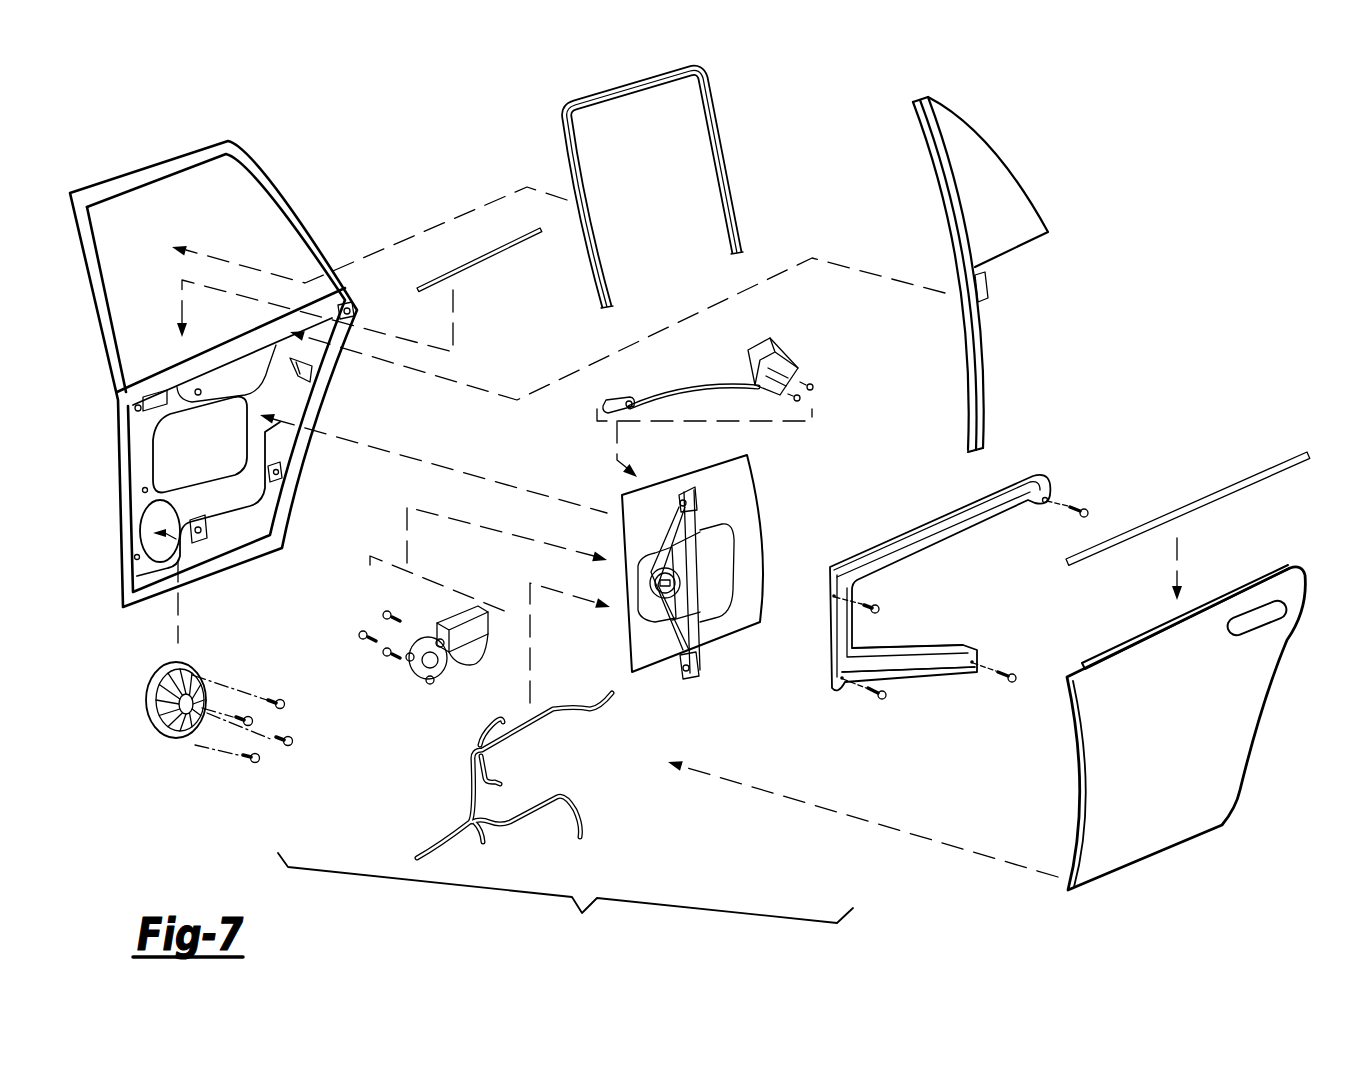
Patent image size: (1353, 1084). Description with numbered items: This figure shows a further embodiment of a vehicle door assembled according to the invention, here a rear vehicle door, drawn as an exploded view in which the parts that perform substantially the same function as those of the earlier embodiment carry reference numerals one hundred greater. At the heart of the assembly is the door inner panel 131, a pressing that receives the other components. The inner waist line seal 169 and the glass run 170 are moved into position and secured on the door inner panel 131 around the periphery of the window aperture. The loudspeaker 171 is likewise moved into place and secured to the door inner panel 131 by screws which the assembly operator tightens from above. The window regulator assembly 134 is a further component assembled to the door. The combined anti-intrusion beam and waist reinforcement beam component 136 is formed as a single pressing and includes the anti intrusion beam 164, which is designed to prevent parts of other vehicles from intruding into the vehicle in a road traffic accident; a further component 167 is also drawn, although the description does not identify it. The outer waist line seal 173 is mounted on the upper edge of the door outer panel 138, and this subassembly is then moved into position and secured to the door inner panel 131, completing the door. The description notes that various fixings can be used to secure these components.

The door inner panel 131 is at (250, 140).
The glass run 170 is at (684, 70).
The inner waist line seal 169 is at (508, 251).
The outer waist line seal 173 is at (1245, 480).
The door frame bracket 167 is at (959, 582).
The anti intrusion beam 164 is at (928, 648).
The combined anti-intrusion beam and waist reinforcement beam component 136 is at (818, 557).
The door outer panel 138 is at (1250, 745).
The loudspeaker 171 is at (148, 700).
The window regulator assembly 134 is at (565, 819).